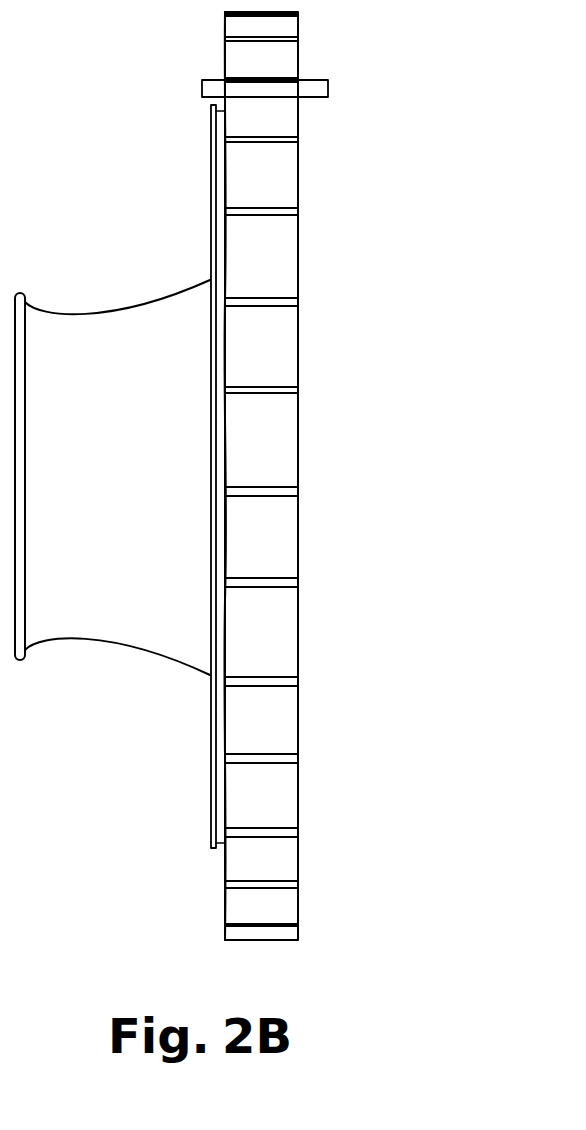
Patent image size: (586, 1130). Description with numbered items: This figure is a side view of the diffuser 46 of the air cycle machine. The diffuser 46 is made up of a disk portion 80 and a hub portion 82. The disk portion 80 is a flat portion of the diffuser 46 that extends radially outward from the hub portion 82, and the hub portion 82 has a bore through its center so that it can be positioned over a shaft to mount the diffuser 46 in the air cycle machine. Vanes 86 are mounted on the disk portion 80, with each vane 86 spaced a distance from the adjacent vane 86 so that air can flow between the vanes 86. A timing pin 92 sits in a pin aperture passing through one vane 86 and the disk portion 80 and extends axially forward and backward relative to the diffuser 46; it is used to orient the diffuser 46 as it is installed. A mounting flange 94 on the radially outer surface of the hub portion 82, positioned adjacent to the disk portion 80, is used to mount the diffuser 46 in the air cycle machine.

The diffuser 46 is at (428, 292).
The disk portion 80 is at (256, 637).
The hub portion 82 is at (112, 340).
The vanes 86 is at (283, 58).
The timing pin 92 is at (208, 88).
The mounting flange 94 is at (212, 757).